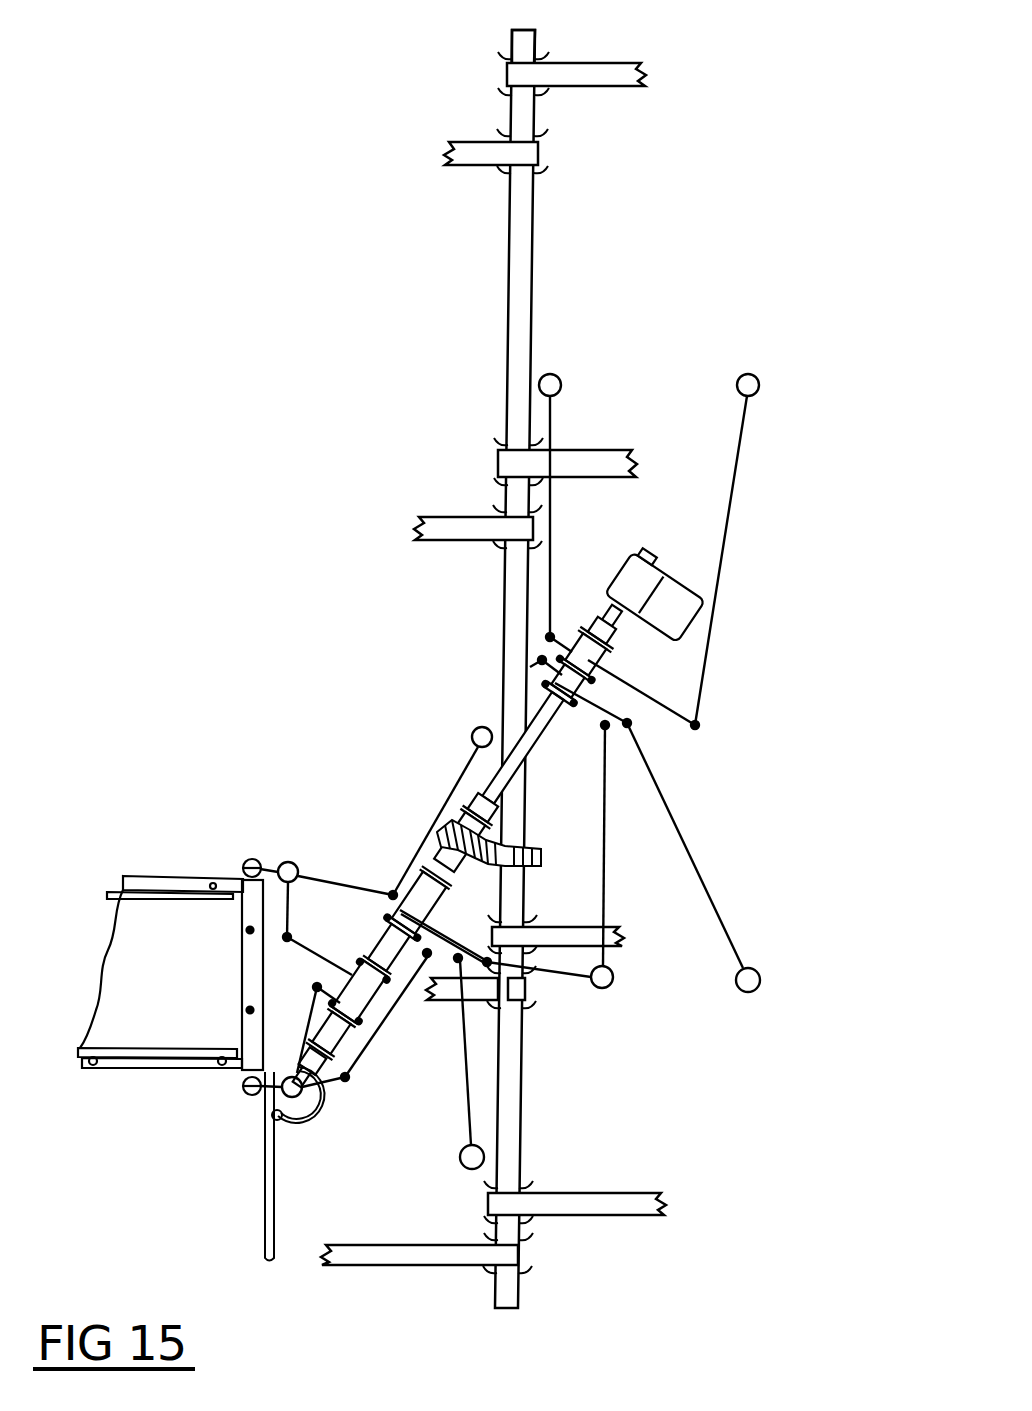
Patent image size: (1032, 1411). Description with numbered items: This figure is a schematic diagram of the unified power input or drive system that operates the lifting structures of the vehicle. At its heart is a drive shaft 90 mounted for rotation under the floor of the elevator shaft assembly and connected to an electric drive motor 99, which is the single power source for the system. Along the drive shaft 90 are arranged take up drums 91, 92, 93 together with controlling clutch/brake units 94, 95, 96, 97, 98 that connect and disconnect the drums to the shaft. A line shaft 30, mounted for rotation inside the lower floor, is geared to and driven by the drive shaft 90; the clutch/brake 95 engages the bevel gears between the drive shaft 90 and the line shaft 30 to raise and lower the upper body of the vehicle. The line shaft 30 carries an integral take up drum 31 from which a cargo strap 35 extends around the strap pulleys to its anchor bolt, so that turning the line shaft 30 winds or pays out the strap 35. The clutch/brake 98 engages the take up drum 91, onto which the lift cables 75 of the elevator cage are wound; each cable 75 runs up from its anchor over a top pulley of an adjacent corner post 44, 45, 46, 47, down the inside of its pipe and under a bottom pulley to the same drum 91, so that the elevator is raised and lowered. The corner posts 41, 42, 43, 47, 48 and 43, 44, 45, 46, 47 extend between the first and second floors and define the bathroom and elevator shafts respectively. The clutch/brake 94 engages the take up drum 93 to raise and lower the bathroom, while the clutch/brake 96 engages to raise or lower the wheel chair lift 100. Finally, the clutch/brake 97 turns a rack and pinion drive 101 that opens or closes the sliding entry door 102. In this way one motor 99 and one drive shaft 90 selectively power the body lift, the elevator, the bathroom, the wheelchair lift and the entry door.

The line shaft 30 is at (532, 277).
The take-up drum 31 is at (498, 92).
The cargo strap 35 is at (603, 63).
The corner post 41 is at (757, 372).
The corner post 42 is at (757, 970).
The corner post 43 is at (607, 987).
The corner post 44 is at (462, 1170).
The corner post 45 is at (270, 1089).
The corner post 46 is at (297, 863).
The corner post 47 is at (475, 728).
The corner post 48 is at (560, 372).
The lift cable 75 is at (728, 527).
The drive shaft 90 is at (522, 748).
The take-up drum 91 is at (418, 902).
The take-up drum 92 is at (388, 949).
The take-up drum 93 is at (566, 706).
The clutch/brake unit 94 is at (583, 660).
The clutch/brake unit 95 is at (466, 833).
The clutch/brake unit 96 is at (358, 993).
The clutch/brake unit 97 is at (319, 1051).
The clutch/brake unit 98 is at (440, 840).
The electric drive motor 99 is at (651, 603).
The wheel chair lift 100 is at (170, 977).
The rack and pinion drive 101 is at (318, 1104).
The sliding entry door 102 is at (262, 1185).